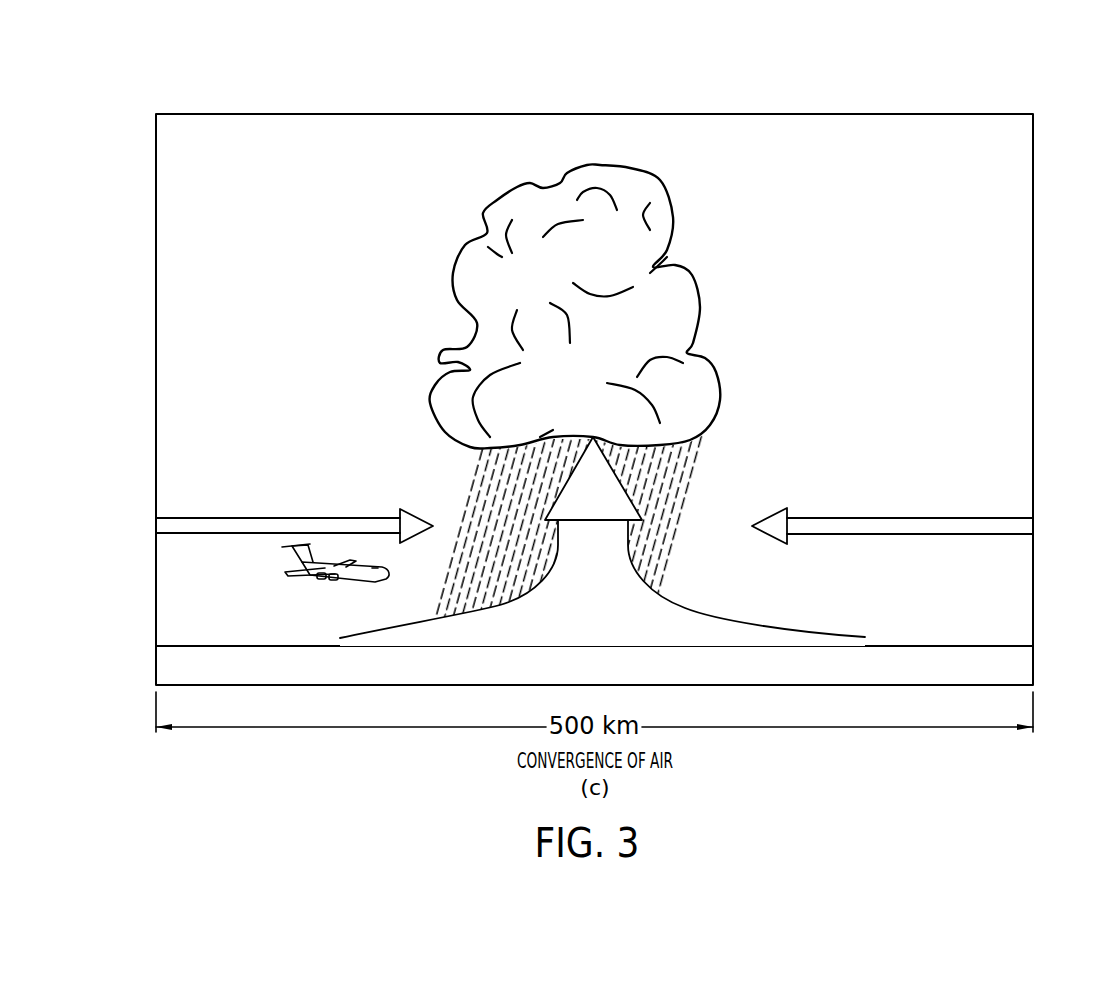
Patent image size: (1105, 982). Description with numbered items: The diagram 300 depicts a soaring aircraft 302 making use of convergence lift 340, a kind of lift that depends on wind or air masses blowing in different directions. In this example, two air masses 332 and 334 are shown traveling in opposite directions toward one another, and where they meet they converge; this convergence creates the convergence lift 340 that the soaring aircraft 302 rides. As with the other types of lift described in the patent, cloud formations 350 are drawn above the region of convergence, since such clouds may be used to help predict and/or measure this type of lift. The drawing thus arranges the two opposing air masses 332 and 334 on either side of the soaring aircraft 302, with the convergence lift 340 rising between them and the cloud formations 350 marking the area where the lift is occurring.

The diagram 300 is at (1006, 103).
The soaring aircraft 302 is at (347, 583).
The air mass 332 is at (298, 517).
The air mass 334 is at (945, 518).
The convergence lift 340 is at (627, 497).
The cloud formations 350 is at (713, 258).